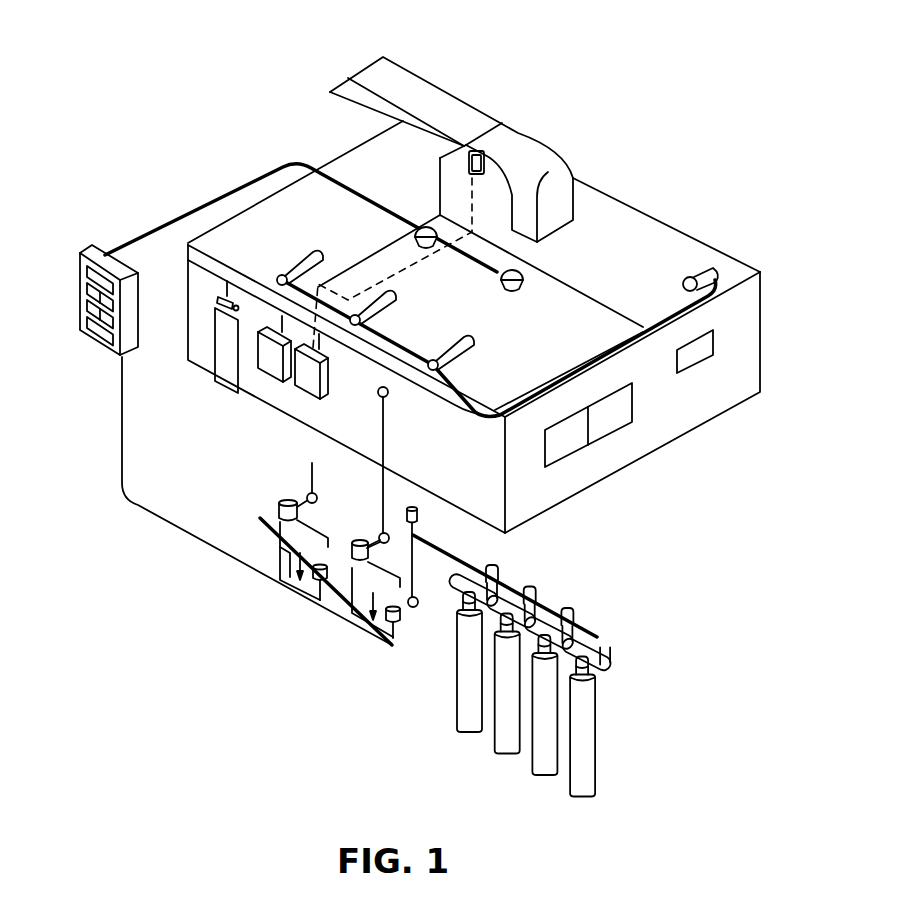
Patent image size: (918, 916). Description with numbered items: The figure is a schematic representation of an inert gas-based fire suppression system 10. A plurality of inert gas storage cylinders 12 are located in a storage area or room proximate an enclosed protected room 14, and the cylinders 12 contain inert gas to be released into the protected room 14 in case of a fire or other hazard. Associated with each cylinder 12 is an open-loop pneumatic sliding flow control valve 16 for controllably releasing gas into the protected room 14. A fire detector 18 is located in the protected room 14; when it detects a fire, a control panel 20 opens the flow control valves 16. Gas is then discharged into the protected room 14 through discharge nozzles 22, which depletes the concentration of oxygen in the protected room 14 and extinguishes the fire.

The inert gas-based fire suppression system 10 is at (594, 62).
The inert gas storage cylinders 12 is at (457, 683).
The protected room 14 is at (636, 228).
The open-loop pneumatic sliding flow control valve 16 is at (599, 642).
The fire detector 18 is at (517, 284).
The control panel 20 is at (92, 328).
The discharge nozzles 22 is at (390, 297).